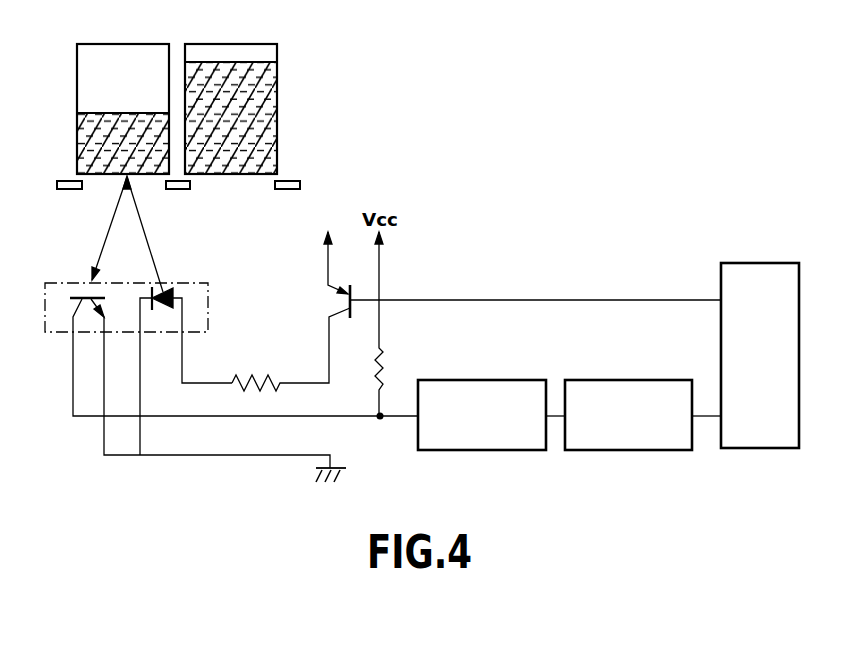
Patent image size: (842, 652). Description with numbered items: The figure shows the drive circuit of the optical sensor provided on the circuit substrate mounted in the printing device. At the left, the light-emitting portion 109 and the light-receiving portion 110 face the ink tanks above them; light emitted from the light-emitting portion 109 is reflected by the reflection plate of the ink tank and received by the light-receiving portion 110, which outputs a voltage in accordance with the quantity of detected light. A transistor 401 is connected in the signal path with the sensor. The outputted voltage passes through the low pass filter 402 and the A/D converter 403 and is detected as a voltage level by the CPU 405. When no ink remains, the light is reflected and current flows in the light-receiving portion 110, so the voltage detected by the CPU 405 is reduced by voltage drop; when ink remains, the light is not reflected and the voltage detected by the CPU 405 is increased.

The light-receiving portion 110 is at (88, 298).
The light-emitting portion 109 is at (163, 290).
The transistor 401 is at (340, 302).
The low pass filter 402 is at (472, 380).
The A/D converter 403 is at (617, 380).
The CPU 405 is at (748, 263).